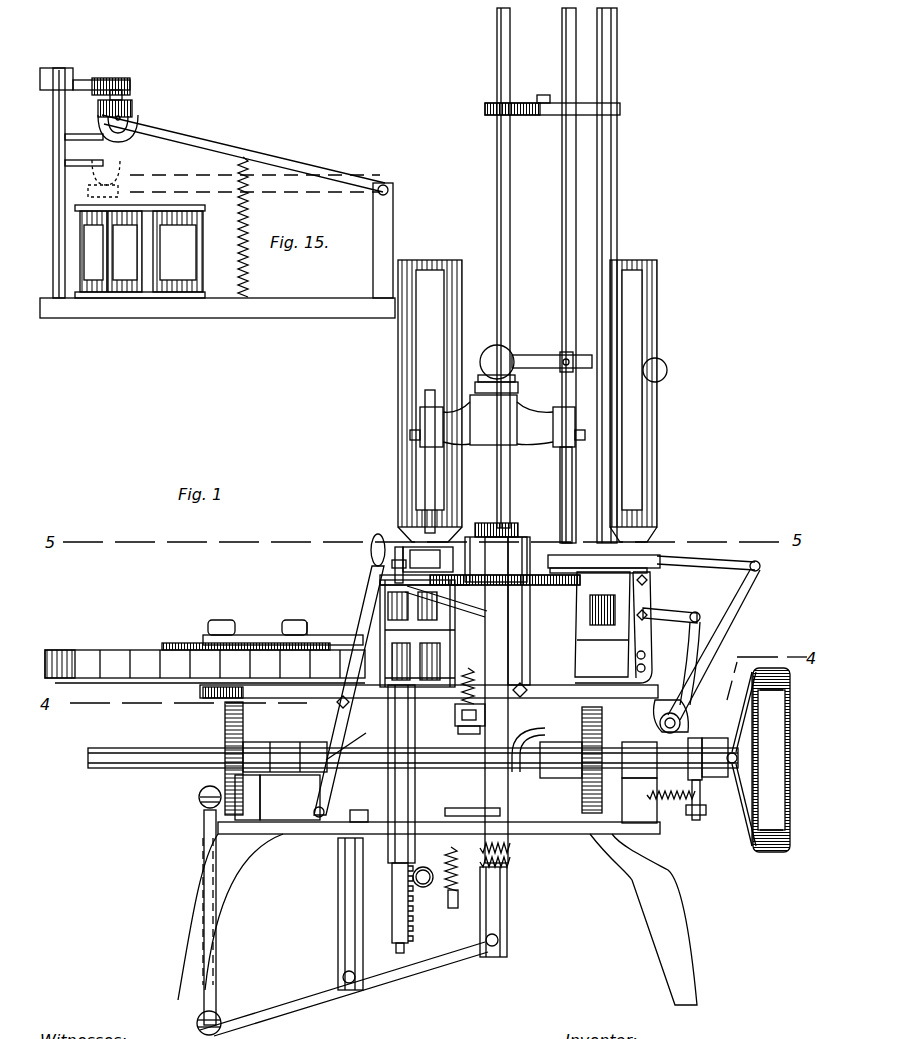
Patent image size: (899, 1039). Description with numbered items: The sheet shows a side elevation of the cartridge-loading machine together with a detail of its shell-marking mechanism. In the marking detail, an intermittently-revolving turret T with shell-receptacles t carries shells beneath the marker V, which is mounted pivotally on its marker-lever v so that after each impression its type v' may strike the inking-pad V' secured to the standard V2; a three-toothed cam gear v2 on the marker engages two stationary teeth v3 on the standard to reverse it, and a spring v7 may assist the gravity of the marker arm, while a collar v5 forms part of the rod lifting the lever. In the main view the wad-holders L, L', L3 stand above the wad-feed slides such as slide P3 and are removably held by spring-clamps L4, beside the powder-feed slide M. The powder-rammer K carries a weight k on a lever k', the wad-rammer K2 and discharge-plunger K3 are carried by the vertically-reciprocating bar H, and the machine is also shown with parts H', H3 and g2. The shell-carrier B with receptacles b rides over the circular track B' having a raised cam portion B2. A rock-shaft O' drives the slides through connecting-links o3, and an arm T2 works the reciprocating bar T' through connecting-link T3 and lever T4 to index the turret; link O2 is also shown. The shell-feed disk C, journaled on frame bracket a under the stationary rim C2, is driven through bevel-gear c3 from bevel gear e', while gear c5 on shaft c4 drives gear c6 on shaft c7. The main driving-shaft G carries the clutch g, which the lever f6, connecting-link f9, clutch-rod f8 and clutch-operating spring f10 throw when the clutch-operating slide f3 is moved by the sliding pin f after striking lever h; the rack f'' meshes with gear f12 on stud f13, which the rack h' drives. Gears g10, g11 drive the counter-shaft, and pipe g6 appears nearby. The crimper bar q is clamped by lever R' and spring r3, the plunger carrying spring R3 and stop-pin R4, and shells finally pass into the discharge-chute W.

In FIG. 15, the turret T is at (217, 211).
In FIG. 15, the shell-receptacles t is at (140, 251).
In FIG. 15, the spring v7 is at (255, 227).
In FIG. 15, the marker-lever v is at (243, 153).
In FIG. 15, the inking-pad V' is at (111, 69).
In FIG. 15, the type v' is at (137, 82).
In FIG. 15, the marker V is at (136, 98).
In FIG. 1, the marker V is at (349, 675).
In FIG. 15, the three-toothed cam gear v2 is at (136, 117).
In FIG. 15, the stationary teeth or pins v3 is at (92, 156).
In FIG. 1, the wad-holder L is at (485, 268).
In FIG. 1, the wad-holder L' is at (553, 275).
In FIG. 1, the wad-holder L3 is at (617, 70).
In FIG. 1, the spring-clamps L4 is at (570, 112).
In FIG. 1, the cylinder H' is at (430, 401).
In FIG. 1, the cylinder H3 is at (633, 401).
In FIG. 1, the weight k is at (665, 370).
In FIG. 1, the discharge-plunger K3 is at (425, 445).
In FIG. 1, the lever k' is at (536, 354).
In FIG. 1, the powder-rammer K is at (518, 387).
In FIG. 1, the wad-rammer K2 is at (572, 465).
In FIG. 1, the gear g2 is at (518, 525).
In FIG. 1, the wad-feed slide P3 is at (600, 560).
In FIG. 1, the powder-feed slide M is at (428, 559).
In FIG. 1, the collar v5 is at (392, 490).
In FIG. 1, the clutch g is at (497, 700).
In FIG. 1, the raised or cam portion B2 is at (500, 630).
In FIG. 1, the shell-carrier B is at (602, 624).
In FIG. 1, the shell-receptacles b is at (598, 616).
In FIG. 1, the circular track B' is at (602, 649).
In FIG. 1, the reciprocating bar T' is at (613, 627).
In FIG. 1, the connecting-link T3 is at (668, 612).
In FIG. 1, the lever T4 is at (645, 640).
In FIG. 1, the arm T2 is at (695, 635).
In FIG. 1, the connecting-links o3 is at (705, 566).
In FIG. 1, the link O2 is at (742, 602).
In FIG. 1, the rock-shaft O' is at (686, 716).
In FIG. 1, the stationary rim or guard C2 is at (205, 666).
In FIG. 1, the shell-feed disk C is at (160, 680).
In FIG. 1, the gear c5 is at (185, 643).
In FIG. 1, the frame bracket a is at (250, 635).
In FIG. 1, the shaft c4 is at (225, 620).
In FIG. 1, the gear c6 is at (292, 620).
In FIG. 1, the shaft c7 is at (316, 617).
In FIG. 1, the standard V2 is at (372, 612).
In FIG. 1, the lever R' is at (480, 700).
In FIG. 1, the spring r3 is at (458, 724).
In FIG. 1, the main driving-shaft G is at (360, 772).
In FIG. 1, the bevel gear e' is at (269, 758).
In FIG. 1, the bevel-gear c3 is at (352, 740).
In FIG. 1, the discharge-chute W is at (415, 785).
In FIG. 1, the connecting-link f9 is at (465, 808).
In FIG. 1, the gear g10 is at (602, 730).
In FIG. 1, the pipe g6 is at (520, 782).
In FIG. 1, the gear g11 is at (582, 790).
In FIG. 1, the clutch-rod f8 is at (680, 800).
In FIG. 1, the clutch-operating spring f10 is at (696, 820).
In FIG. 1, the sliding bar q is at (715, 777).
In FIG. 1, the lever h is at (366, 914).
In FIG. 1, the lever f6 is at (340, 823).
In FIG. 1, the rack f'' is at (415, 903).
In FIG. 1, the sliding pin f is at (388, 950).
In FIG. 1, the clutch-operating slide f3 is at (392, 895).
In FIG. 1, the stud or shaft f13 is at (427, 880).
In FIG. 1, the gear f12 is at (440, 898).
In FIG. 1, the rack h' is at (461, 908).
In FIG. 1, the stop-pin R4 is at (510, 850).
In FIG. 1, the spring R3 is at (510, 862).